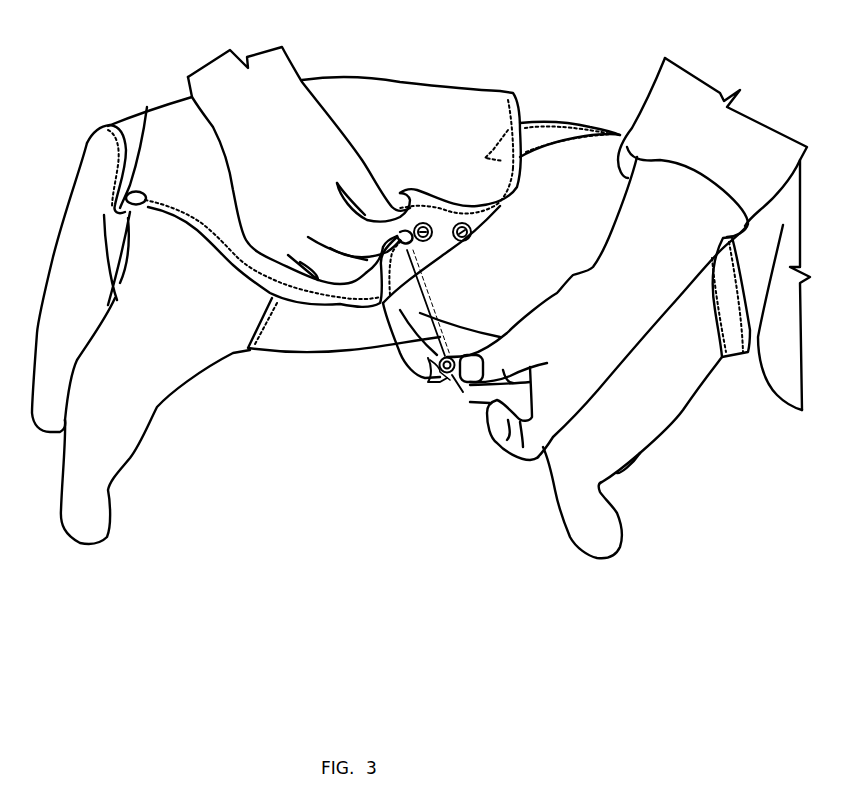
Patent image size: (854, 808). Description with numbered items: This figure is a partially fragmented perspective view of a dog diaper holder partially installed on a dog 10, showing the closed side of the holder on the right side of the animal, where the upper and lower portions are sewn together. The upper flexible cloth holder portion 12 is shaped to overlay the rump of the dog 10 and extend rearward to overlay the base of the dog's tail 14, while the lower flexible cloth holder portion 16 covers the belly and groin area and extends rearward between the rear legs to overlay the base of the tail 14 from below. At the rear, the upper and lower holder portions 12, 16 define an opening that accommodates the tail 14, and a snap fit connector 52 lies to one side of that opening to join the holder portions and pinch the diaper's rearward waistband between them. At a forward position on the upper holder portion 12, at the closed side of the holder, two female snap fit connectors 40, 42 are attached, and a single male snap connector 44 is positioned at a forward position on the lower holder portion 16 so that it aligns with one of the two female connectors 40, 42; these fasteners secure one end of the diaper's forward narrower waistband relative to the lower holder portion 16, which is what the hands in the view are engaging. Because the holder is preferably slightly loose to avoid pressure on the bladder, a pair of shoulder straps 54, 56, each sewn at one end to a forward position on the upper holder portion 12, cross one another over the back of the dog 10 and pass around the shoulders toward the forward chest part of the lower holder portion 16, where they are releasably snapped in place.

The dog 10 is at (708, 432).
The upper holder portion 12 is at (403, 97).
The dog's tail 14 is at (85, 187).
The lower holder portion 16 is at (307, 333).
The female snap fit connector 40 is at (425, 223).
The female snap fit connector 42 is at (464, 223).
The male snap connector 44 is at (457, 392).
The snap fit connector 52 is at (152, 110).
The shoulder strap 54 is at (554, 123).
The shoulder strap 56 is at (733, 343).